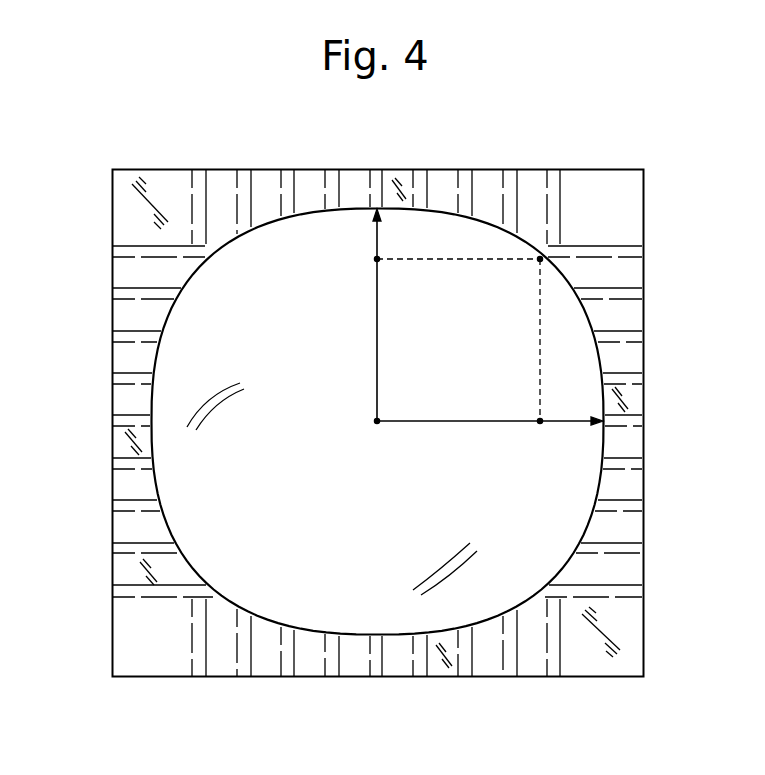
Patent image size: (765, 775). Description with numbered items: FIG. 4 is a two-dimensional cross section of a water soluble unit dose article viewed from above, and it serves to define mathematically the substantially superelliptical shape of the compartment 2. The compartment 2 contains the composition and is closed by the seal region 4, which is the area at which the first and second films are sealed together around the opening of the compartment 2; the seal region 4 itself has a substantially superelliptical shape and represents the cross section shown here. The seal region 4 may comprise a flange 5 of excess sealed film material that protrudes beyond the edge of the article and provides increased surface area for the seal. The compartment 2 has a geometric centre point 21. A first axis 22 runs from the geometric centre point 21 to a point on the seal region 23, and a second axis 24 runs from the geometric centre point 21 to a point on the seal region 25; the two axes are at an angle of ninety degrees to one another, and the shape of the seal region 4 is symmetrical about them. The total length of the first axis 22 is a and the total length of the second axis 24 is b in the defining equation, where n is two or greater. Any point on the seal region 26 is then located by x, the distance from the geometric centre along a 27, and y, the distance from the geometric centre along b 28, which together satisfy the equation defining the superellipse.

The compartment 2 is at (230, 316).
The seal region 4 is at (150, 402).
The flange 5 is at (134, 630).
The geometric centre point 21 is at (377, 424).
The first axis 22 is at (377, 330).
The point on the seal region 23 is at (377, 208).
The second axis 24 is at (468, 422).
The point on the seal region 25 is at (605, 421).
The point on the seal region 26 is at (541, 258).
The distance from the geometric centre along a 27 is at (445, 258).
The distance from the geometric centre along b 28 is at (540, 356).